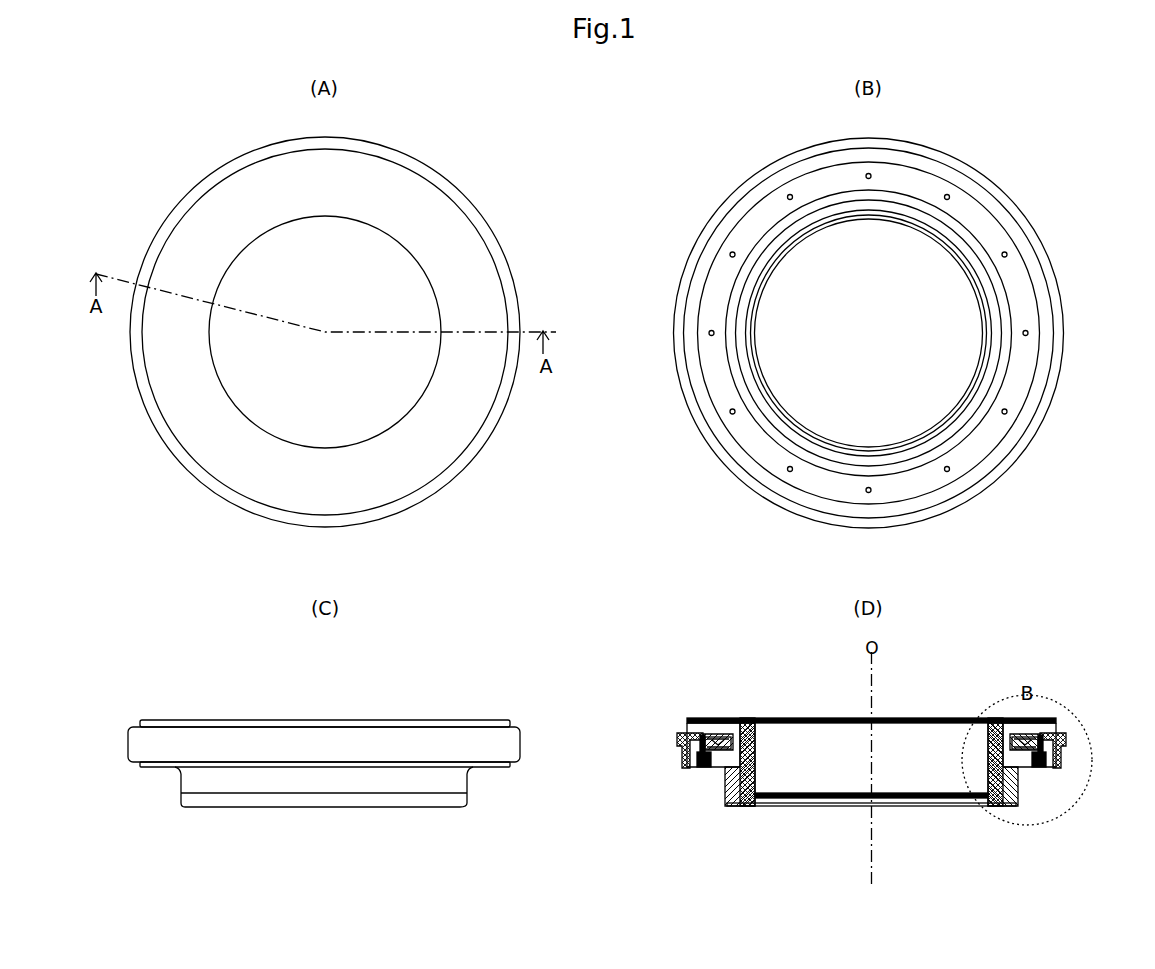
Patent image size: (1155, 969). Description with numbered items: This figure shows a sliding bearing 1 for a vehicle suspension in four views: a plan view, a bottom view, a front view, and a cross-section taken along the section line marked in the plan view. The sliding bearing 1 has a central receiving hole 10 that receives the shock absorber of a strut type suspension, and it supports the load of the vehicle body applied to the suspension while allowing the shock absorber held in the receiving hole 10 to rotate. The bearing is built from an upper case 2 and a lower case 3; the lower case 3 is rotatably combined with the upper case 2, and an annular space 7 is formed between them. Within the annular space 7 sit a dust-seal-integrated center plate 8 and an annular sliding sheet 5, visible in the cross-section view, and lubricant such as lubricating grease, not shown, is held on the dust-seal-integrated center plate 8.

The sliding bearing 1 is at (511, 120).
The upper case 2 is at (370, 182).
The lower case 3 is at (920, 183).
The annular sliding sheet 5 is at (716, 732).
The annular space 7 is at (683, 725).
The dust-seal-integrated center plate 8 is at (705, 766).
The receiving hole 10 is at (404, 297).